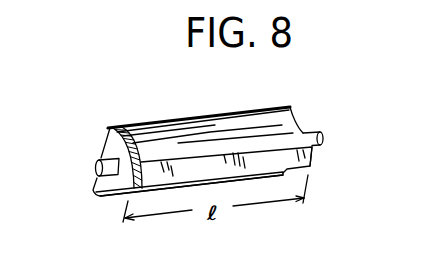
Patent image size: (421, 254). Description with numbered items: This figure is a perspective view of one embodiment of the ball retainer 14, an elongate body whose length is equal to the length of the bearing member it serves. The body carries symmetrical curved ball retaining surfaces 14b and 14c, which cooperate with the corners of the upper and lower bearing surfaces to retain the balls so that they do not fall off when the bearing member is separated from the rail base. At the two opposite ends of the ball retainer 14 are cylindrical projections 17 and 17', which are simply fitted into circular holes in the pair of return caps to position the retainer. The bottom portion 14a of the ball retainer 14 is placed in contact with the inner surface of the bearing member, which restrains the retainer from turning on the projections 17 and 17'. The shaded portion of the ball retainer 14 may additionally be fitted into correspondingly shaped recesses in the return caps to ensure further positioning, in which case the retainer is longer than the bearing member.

The ball retainer 14 is at (212, 151).
The bottom portion 14a is at (310, 157).
The curved ball retaining surface 14b is at (295, 126).
The curved ball retaining surface 14c is at (115, 195).
The cylindrical projection 17 is at (87, 159).
The cylindrical projection 17' is at (339, 139).